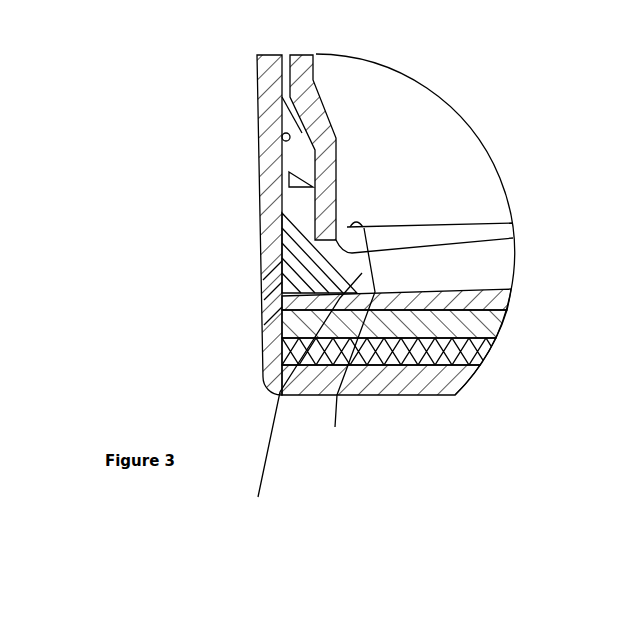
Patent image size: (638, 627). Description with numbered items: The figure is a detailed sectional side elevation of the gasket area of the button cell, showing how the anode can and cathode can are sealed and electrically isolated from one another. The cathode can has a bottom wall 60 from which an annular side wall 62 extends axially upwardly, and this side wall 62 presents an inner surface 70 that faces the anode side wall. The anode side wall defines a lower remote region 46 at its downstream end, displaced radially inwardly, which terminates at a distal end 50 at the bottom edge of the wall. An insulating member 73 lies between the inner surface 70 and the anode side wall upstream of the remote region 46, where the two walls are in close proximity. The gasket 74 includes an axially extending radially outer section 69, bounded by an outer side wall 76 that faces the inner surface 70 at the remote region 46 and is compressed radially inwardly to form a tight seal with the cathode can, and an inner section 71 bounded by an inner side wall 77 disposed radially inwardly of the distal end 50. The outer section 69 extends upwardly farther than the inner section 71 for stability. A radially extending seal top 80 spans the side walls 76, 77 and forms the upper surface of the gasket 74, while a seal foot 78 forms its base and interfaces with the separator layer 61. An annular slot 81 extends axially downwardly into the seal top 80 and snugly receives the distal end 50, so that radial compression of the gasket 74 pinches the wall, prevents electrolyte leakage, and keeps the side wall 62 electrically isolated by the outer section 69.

The remote region 46 is at (344, 143).
The distal end 50 is at (337, 188).
The bottom wall 60 is at (416, 396).
The separator layer 61 is at (497, 300).
The annular side wall 62 is at (250, 313).
The radially outer section 69 is at (282, 222).
The inner surface 70 is at (257, 131).
The inner section 71 is at (349, 342).
The insulating member 73 is at (303, 82).
The gasket 74 is at (274, 268).
The outer side wall 76 is at (282, 290).
The inner side wall 77 is at (373, 269).
The seal foot 78 is at (305, 400).
The seal top 80 is at (260, 163).
The annular slot 81 is at (511, 236).